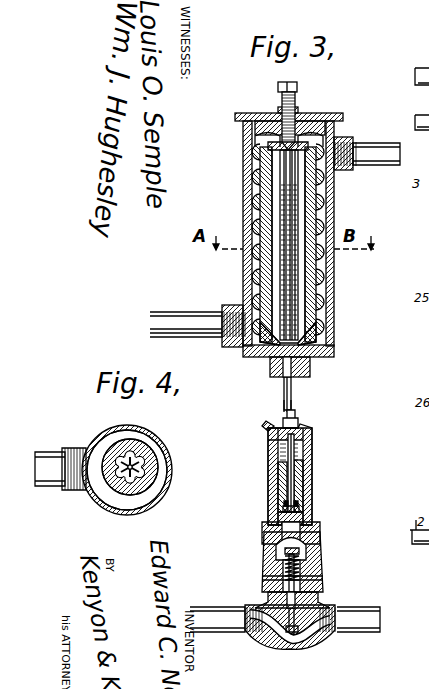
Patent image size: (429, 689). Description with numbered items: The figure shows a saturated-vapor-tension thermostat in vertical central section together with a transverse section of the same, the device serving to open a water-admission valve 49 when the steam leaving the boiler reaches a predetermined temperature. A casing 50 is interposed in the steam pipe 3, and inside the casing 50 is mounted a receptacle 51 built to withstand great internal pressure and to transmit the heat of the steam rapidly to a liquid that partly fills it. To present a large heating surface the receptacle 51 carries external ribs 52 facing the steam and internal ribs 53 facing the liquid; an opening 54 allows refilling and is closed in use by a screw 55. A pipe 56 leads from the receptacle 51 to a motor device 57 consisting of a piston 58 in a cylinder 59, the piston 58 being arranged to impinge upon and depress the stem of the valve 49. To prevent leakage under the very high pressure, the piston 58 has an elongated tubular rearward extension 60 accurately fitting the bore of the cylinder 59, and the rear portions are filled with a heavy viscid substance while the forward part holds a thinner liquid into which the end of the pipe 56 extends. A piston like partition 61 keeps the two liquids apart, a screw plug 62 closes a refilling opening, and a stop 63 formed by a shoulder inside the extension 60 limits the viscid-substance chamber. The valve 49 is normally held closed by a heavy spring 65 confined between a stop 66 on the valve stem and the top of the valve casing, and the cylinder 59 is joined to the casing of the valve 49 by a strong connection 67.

In FIG. 3, the steam pipe 3 is at (407, 180).
In FIG. 4, the steam pipe 3 is at (60, 469).
In FIG. 3, the valve 49 is at (305, 647).
In FIG. 3, the casing 50 is at (334, 305).
In FIG. 4, the casing 50 is at (152, 508).
In FIG. 3, the receptacle 51 is at (320, 290).
In FIG. 3, the external ribs 52 is at (322, 205).
In FIG. 4, the external ribs 52 is at (165, 478).
In FIG. 3, the internal ribs 53 is at (298, 162).
In FIG. 4, the internal ribs 53 is at (150, 457).
In FIG. 3, the opening 54 is at (300, 110).
In FIG. 3, the screw 55 is at (278, 108).
In FIG. 3, the pipe 56 is at (291, 392).
In FIG. 3, the motor device 57 is at (268, 446).
In FIG. 4, the motor device 57 is at (108, 447).
In FIG. 3, the piston 58 is at (278, 483).
In FIG. 3, the cylinder 59 is at (264, 528).
In FIG. 3, the elongated tubular rearward extension 60 is at (296, 476).
In FIG. 3, the piston like partition 61 is at (299, 506).
In FIG. 3, the screw plug 62 is at (264, 428).
In FIG. 3, the stop 63 is at (284, 504).
In FIG. 3, the spring 65 is at (285, 562).
In FIG. 3, the stop 66 is at (300, 562).
In FIG. 3, the connection 67 is at (262, 578).